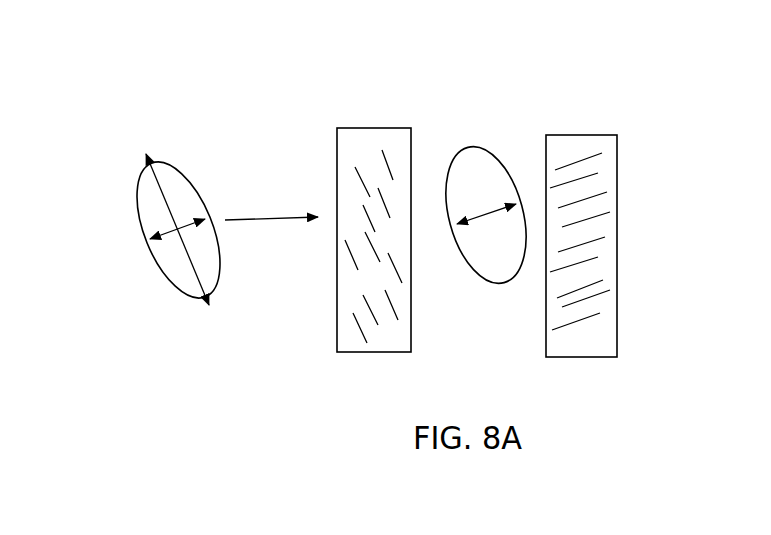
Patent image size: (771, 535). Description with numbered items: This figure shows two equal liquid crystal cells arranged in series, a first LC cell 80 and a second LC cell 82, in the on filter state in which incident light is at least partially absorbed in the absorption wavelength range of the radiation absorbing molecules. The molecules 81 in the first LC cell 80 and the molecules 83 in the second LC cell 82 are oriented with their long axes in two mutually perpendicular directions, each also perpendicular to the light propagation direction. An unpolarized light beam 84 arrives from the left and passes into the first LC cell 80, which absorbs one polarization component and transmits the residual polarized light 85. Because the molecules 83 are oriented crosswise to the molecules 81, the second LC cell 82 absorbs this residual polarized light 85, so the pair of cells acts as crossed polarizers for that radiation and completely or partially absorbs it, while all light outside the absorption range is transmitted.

The first LC cell 80 is at (373, 128).
The molecules in the first LC cell 81 is at (364, 256).
The second LC cell 82 is at (583, 135).
The molecules in the second LC cell 83 is at (601, 225).
The unpolarized light beam 84 is at (240, 160).
The residual polarized light 85 is at (478, 134).